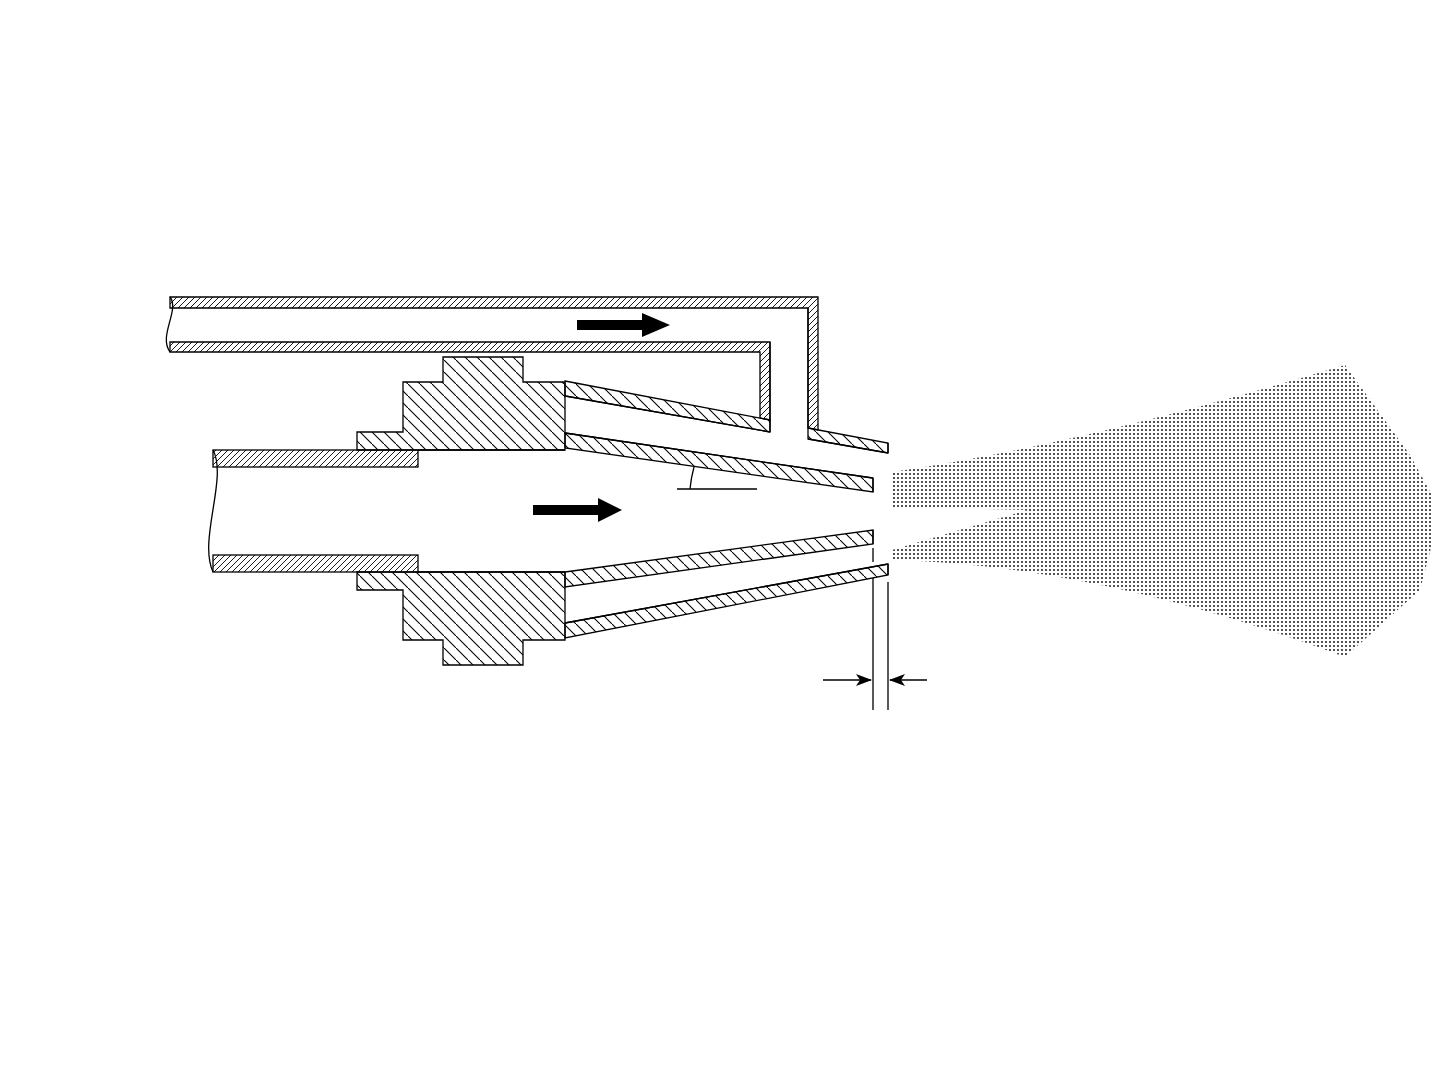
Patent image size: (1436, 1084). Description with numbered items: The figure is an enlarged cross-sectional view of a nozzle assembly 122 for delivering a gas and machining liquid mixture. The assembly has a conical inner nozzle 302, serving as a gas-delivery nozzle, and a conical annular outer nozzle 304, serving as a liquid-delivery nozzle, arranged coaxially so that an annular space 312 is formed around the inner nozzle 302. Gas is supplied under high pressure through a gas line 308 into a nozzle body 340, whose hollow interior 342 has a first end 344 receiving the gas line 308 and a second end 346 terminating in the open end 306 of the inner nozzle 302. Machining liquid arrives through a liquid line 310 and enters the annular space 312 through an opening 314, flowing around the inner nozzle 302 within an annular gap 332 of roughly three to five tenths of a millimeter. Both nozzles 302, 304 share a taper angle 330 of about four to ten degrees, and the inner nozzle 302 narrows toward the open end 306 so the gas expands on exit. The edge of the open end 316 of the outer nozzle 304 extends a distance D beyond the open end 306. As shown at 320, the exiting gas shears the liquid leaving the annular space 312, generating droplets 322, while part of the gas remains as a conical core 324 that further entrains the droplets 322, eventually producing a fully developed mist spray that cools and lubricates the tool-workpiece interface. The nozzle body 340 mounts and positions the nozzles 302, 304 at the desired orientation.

The nozzle assembly 122 is at (131, 71).
The inner nozzle 302 is at (708, 568).
The outer nozzle 304 is at (728, 607).
The open end 306 is at (892, 485).
The gas line 308 is at (213, 573).
The liquid line 310 is at (497, 297).
The annular space 312 is at (829, 457).
The opening 314 is at (787, 435).
The open end 316 is at (876, 509).
The gas shearing region 320 is at (909, 565).
The droplets 322 is at (1133, 415).
The conical core 324 is at (959, 504).
The taper angle 330 is at (690, 478).
The annular gap 332 is at (824, 578).
The nozzle body 340 is at (443, 665).
The hollow interior 342 is at (463, 572).
The first end 344 is at (334, 614).
The second end 346 is at (710, 527).